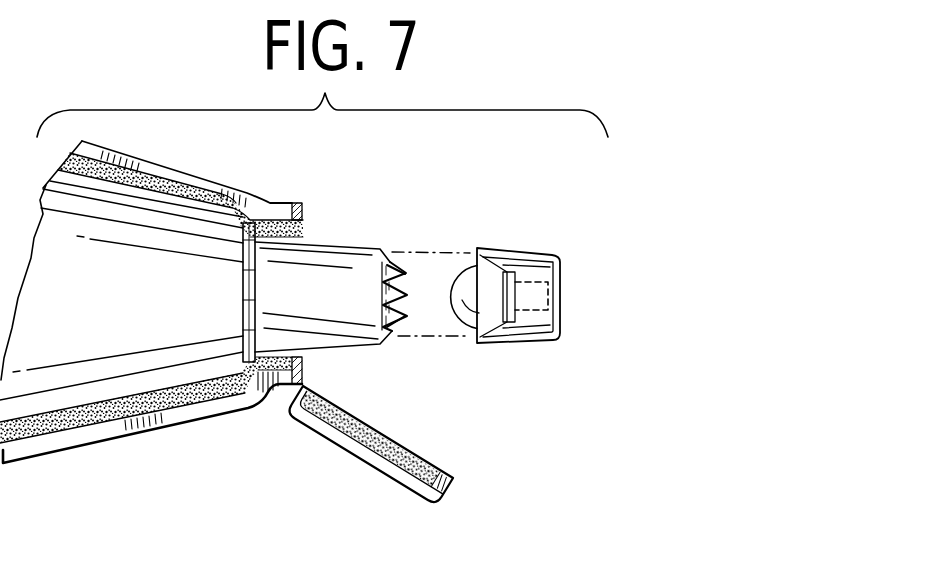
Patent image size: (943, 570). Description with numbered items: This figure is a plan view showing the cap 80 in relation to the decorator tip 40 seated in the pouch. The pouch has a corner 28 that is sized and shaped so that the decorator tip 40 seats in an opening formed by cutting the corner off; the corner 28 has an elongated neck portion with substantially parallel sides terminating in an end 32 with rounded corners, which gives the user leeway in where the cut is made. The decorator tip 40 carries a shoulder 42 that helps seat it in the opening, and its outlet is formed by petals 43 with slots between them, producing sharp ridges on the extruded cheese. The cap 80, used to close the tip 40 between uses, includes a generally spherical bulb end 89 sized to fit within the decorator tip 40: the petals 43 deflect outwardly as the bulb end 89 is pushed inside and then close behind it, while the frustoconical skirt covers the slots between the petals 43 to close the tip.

The corner 28 is at (215, 223).
The end 32 is at (368, 474).
The decorator tip 40 is at (352, 268).
The shoulder 42 is at (262, 251).
The petals 43 is at (392, 258).
The cap 80 is at (538, 248).
The bulb end 89 is at (463, 312).